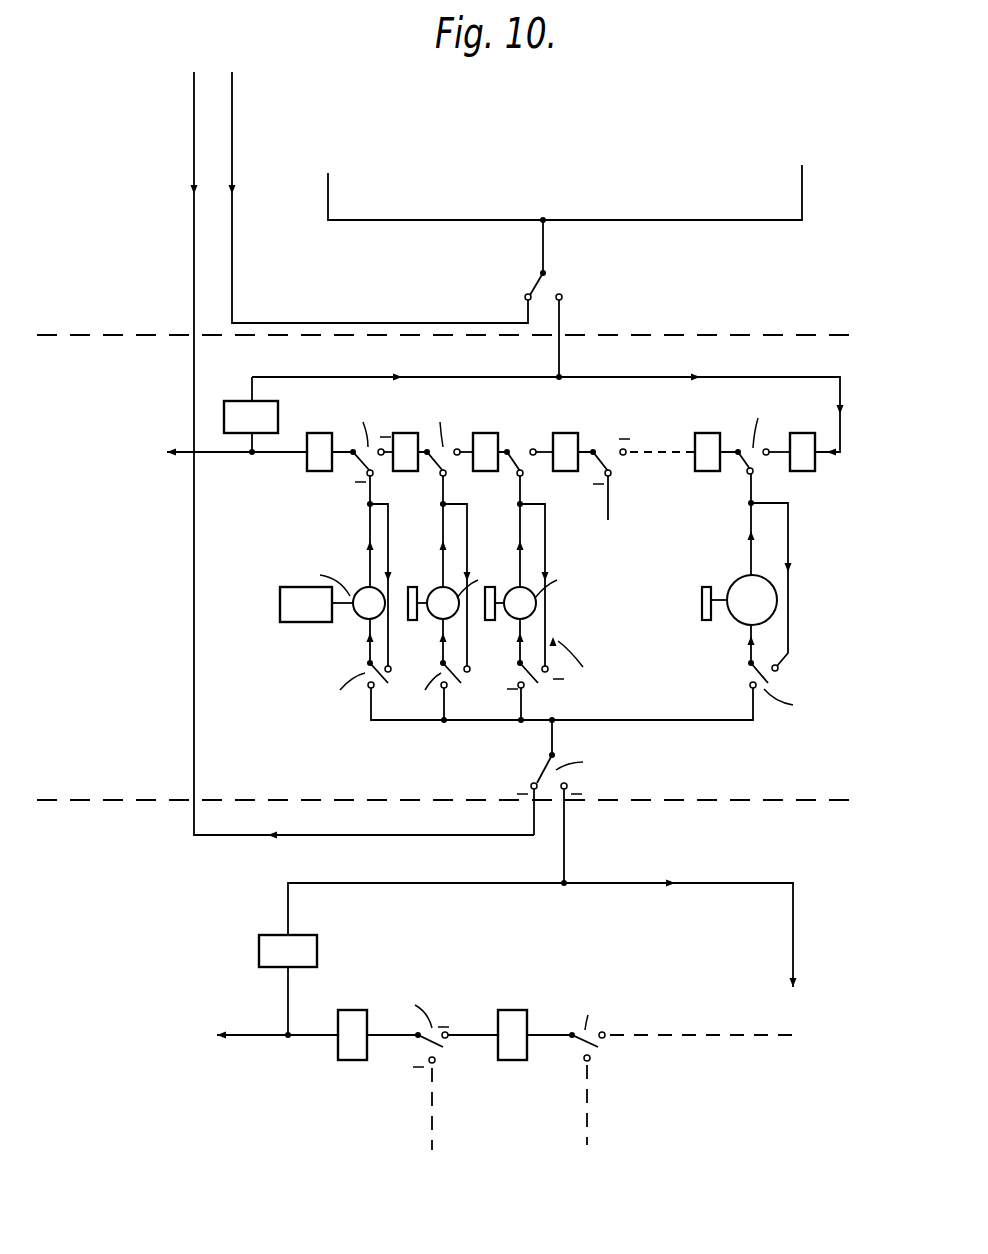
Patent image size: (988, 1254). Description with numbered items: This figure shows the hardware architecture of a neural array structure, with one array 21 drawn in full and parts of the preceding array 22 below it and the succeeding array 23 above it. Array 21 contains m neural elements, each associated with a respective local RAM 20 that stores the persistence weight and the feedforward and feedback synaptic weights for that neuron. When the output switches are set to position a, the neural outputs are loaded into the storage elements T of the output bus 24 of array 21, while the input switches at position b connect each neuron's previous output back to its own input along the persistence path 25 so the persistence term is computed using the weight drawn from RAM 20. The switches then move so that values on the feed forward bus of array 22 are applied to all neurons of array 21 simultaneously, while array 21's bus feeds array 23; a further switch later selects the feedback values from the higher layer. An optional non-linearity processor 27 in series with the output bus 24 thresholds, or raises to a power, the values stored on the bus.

The local RAM 20 is at (305, 622).
The array 21 is at (140, 613).
The preceding array 22 is at (145, 978).
The succeeding array 23 is at (135, 147).
The output bus 24 is at (575, 385).
The persistence path 25 is at (390, 523).
The non-linearity processor 27 is at (232, 401).